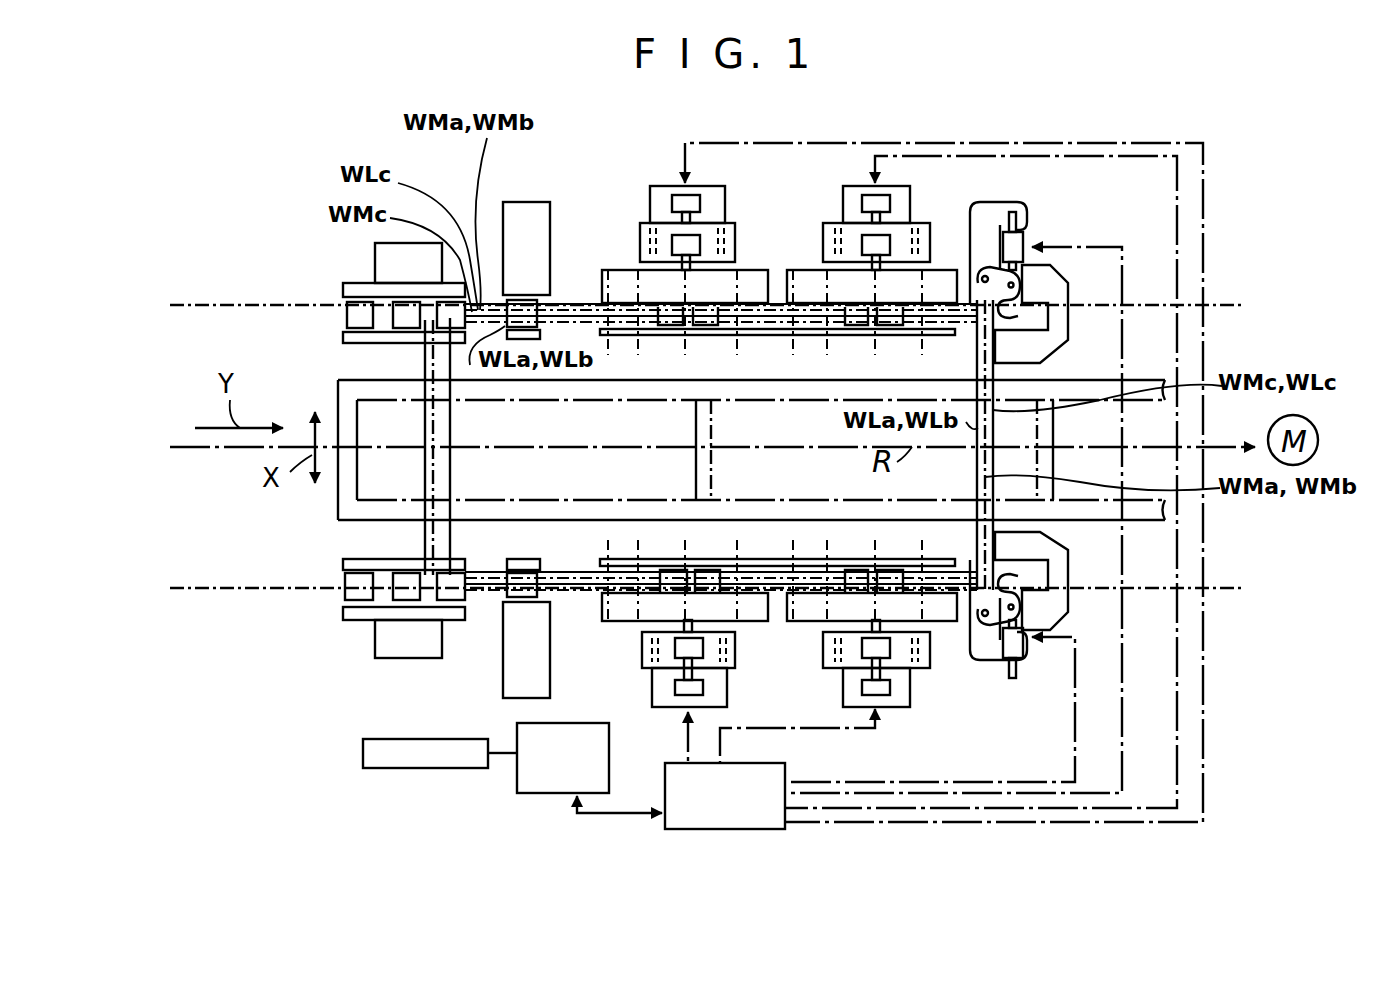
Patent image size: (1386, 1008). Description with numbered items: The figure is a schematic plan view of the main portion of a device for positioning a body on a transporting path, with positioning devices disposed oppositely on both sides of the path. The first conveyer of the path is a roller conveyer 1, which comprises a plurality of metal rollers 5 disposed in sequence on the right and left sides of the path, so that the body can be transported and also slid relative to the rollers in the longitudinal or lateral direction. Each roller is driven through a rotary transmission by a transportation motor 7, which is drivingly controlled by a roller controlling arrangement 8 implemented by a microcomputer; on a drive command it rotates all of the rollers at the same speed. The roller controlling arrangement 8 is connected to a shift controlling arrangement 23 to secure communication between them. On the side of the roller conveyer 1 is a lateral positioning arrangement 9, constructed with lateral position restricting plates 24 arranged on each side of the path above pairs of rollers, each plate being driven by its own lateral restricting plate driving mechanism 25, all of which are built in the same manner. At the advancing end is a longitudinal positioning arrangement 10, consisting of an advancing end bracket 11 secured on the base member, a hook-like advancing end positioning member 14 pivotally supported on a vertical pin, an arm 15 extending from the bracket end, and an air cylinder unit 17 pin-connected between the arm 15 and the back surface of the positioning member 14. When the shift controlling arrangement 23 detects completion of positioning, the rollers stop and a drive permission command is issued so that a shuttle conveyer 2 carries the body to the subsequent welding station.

The roller conveyer 1 is at (766, 330).
The shuttle conveyer 2 is at (1137, 380).
The metal rollers 5 is at (673, 326).
The transportation motor 7 is at (425, 745).
The roller controlling arrangement 8 is at (609, 750).
The lateral positioning arrangement 9 is at (658, 156).
The longitudinal positioning arrangement 10 is at (1091, 222).
The advancing end bracket 11 is at (1058, 283).
The advancing end positioning member 14 is at (1023, 308).
The arm 15 is at (983, 214).
The air cylinder unit 17 is at (1028, 238).
The shift controlling arrangement 23 is at (785, 776).
The lateral position restricting plates 24 is at (620, 275).
The lateral restricting plate driving mechanism 25 is at (650, 207).